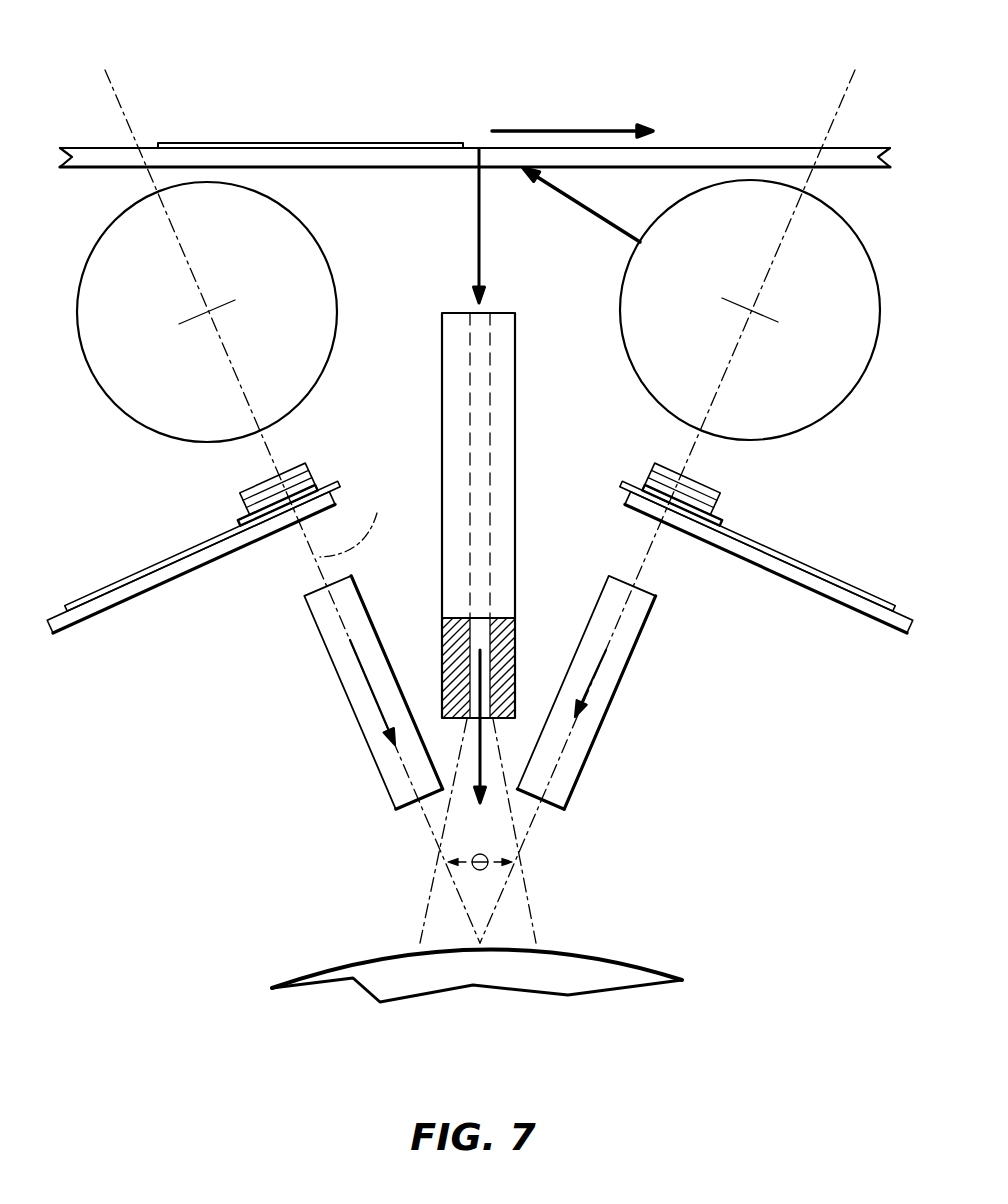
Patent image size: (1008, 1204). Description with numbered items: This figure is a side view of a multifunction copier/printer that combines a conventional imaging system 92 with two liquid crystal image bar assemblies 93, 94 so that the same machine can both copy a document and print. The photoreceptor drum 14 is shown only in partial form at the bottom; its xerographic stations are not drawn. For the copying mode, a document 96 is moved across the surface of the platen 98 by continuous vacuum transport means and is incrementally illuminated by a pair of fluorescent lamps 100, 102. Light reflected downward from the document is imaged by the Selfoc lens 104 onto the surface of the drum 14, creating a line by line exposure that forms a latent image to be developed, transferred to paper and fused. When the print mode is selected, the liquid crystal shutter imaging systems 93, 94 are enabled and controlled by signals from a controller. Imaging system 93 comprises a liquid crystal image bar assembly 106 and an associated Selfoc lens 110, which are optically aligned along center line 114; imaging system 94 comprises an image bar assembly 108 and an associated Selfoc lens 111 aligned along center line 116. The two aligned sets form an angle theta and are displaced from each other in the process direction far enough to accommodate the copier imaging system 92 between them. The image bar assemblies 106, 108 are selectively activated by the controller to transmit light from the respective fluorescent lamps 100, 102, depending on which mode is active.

The photoreceptor drum 14 is at (600, 957).
The conventional imaging system 92 is at (550, 517).
The liquid crystal image bar assembly (imaging system) 93 is at (284, 566).
The liquid crystal image bar assembly (imaging system) 94 is at (686, 572).
The document 96 is at (397, 143).
The platen 98 is at (697, 150).
The fluorescent lamp 100 is at (222, 203).
The fluorescent lamp 102 is at (772, 212).
The Selfoc lens 104 is at (503, 447).
The liquid crystal image bar assembly 106 is at (131, 582).
The liquid crystal image bar assembly 108 is at (825, 578).
The Selfoc lens 110 is at (345, 688).
The Selfoc lens 111 is at (600, 695).
The center line 114 is at (361, 520).
The center line 116 is at (690, 466).